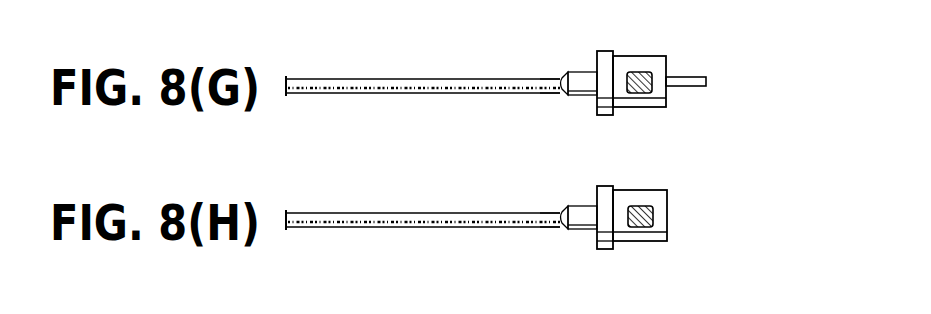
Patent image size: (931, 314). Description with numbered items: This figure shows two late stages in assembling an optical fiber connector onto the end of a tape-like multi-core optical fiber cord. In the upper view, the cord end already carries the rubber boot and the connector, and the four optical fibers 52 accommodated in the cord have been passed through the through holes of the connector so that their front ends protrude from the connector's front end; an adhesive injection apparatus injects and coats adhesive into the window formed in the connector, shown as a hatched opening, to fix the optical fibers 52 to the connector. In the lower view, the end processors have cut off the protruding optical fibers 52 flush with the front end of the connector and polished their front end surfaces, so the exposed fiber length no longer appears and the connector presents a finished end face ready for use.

The optical fibers 52 is at (700, 72).